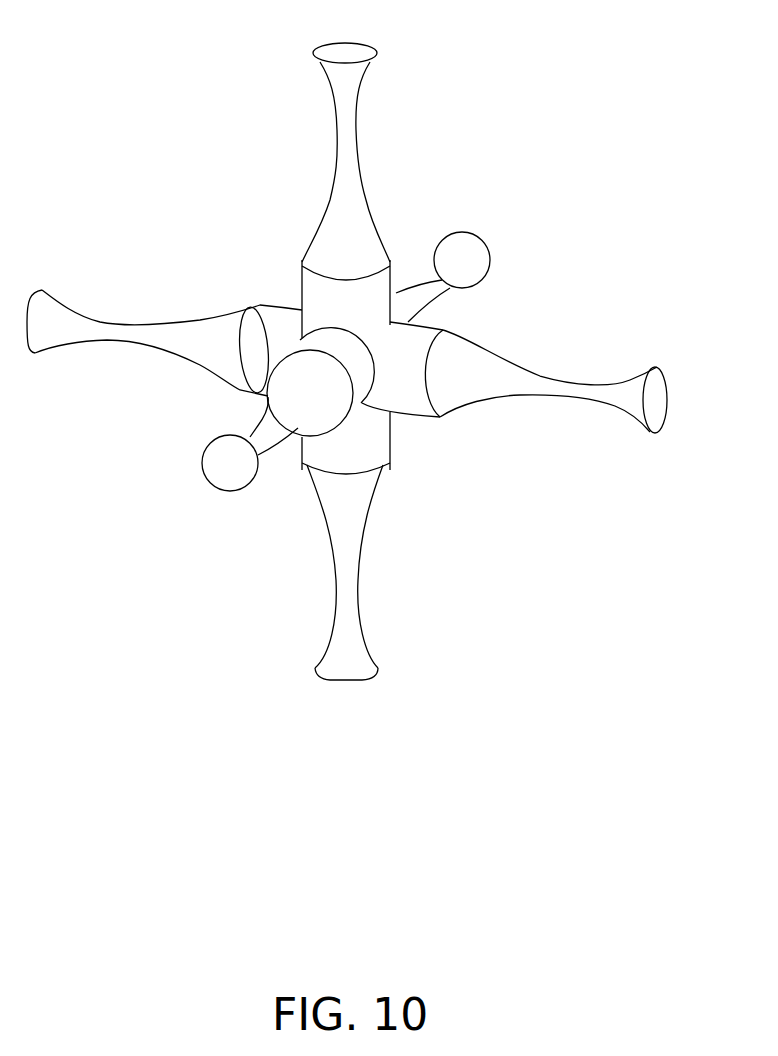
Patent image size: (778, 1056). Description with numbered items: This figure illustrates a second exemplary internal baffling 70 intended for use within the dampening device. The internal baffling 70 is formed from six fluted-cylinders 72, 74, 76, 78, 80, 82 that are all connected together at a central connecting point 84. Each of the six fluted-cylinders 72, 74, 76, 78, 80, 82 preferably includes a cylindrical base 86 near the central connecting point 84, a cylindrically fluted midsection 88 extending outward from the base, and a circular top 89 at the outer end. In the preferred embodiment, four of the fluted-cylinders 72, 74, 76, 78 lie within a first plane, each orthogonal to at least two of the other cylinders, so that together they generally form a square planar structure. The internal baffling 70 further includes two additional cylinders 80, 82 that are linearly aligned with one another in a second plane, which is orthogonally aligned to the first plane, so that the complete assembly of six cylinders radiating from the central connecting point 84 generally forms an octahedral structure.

The internal baffling 70 is at (206, 64).
The fluted-cylinder 72 is at (95, 328).
The fluted-cylinder 74 is at (212, 458).
The fluted-cylinder 76 is at (475, 395).
The fluted-cylinder 78 is at (487, 265).
The additional cylinder 80 is at (348, 517).
The additional cylinder 82 is at (359, 149).
The central connecting point 84 is at (381, 327).
The cylindrical base 86 is at (313, 293).
The cylindrically fluted midsection 88 is at (343, 143).
The circular top 89 is at (365, 56).